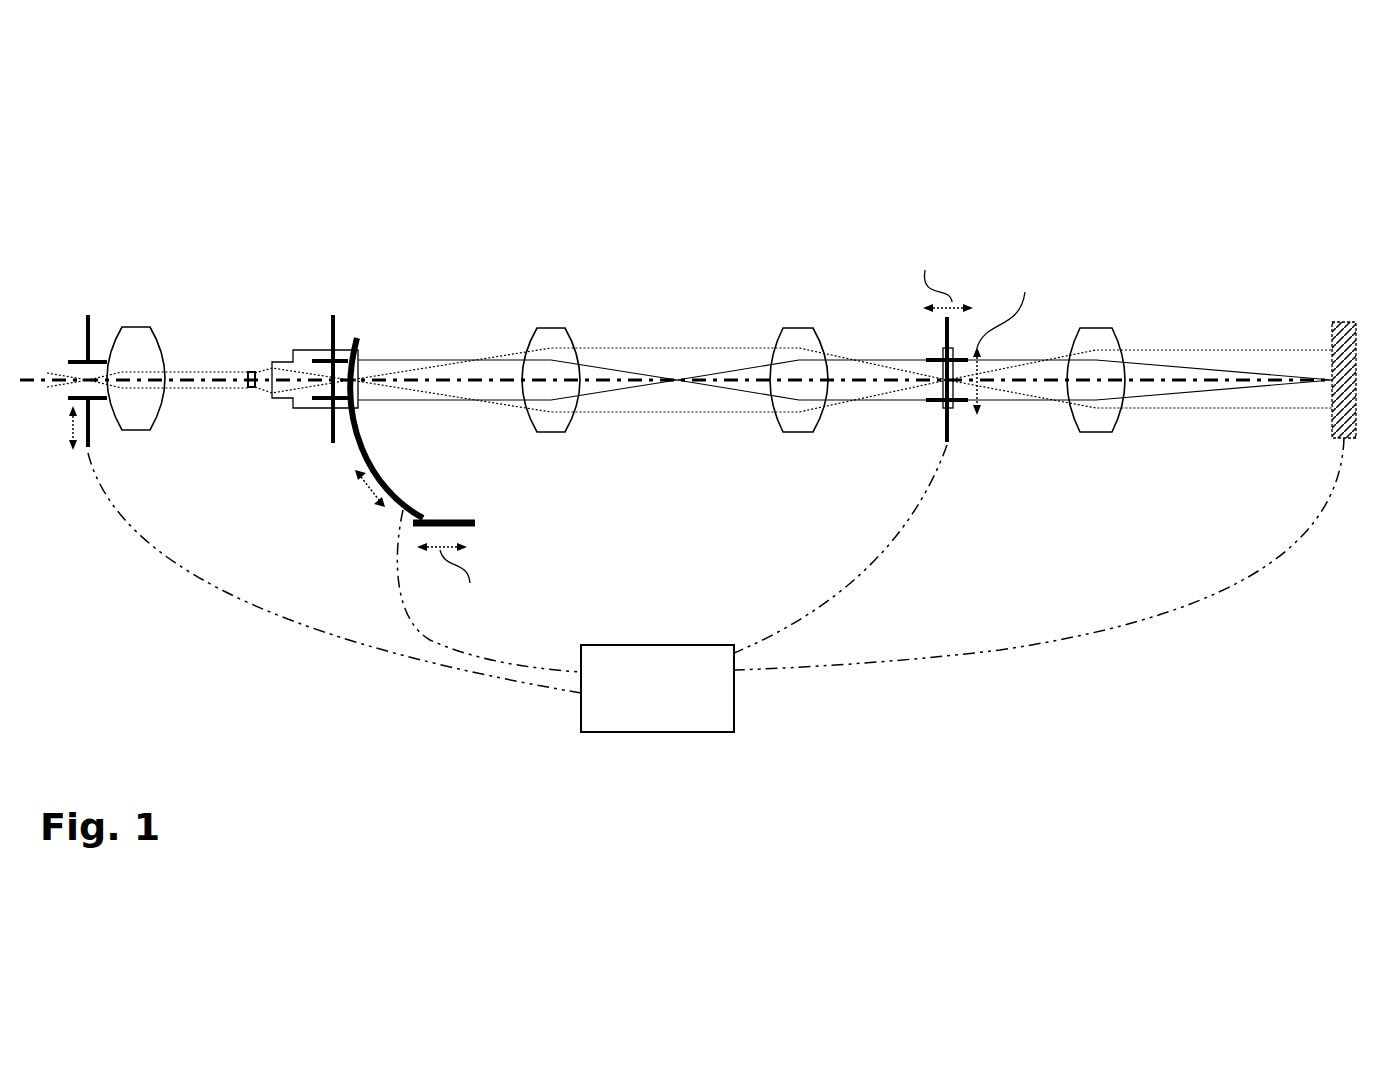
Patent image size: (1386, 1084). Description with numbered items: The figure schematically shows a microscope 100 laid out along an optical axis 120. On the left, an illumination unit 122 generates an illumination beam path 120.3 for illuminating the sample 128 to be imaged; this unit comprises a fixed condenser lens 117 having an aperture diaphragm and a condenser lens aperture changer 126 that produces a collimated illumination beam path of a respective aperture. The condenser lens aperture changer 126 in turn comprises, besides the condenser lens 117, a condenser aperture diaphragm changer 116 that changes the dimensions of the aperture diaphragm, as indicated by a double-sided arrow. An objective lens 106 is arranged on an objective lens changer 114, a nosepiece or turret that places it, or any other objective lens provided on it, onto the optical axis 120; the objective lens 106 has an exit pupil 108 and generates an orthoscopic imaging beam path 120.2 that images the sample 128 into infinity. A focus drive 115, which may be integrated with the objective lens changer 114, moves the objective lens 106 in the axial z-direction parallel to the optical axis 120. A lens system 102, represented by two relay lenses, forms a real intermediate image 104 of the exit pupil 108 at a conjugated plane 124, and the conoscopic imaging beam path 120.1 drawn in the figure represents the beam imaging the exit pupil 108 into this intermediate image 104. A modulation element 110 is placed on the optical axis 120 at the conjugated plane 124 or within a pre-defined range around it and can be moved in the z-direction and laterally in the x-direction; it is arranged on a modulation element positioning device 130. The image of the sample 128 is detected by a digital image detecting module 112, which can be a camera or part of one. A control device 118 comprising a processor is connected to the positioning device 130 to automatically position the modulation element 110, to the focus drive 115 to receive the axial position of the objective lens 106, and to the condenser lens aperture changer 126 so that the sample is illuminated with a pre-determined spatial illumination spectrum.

The microscope 100 is at (1248, 210).
The lens system 102 is at (522, 433).
The intermediate image 104 is at (940, 362).
The objective lens 106 is at (283, 405).
The exit pupil 108 is at (337, 366).
The modulation element 110 is at (922, 398).
The digital image detecting module 112 is at (1332, 330).
The objective lens changer 114 is at (362, 460).
The focus drive 115 is at (468, 528).
The condenser aperture diaphragm changer 116 is at (92, 427).
The condenser lens 117 is at (138, 327).
The control device 118 is at (734, 695).
The optical axis 120 is at (23, 383).
The conoscopic imaging beam path 120.1 is at (600, 348).
The orthoscopic imaging beam path 120.2 is at (627, 372).
The illumination beam path 120.3 is at (180, 373).
The illumination unit 122 is at (98, 278).
The conjugated plane 124 is at (948, 378).
The condenser lens aperture changer 126 is at (112, 464).
The sample 128 is at (250, 372).
The modulation element positioning device 130 is at (975, 430).